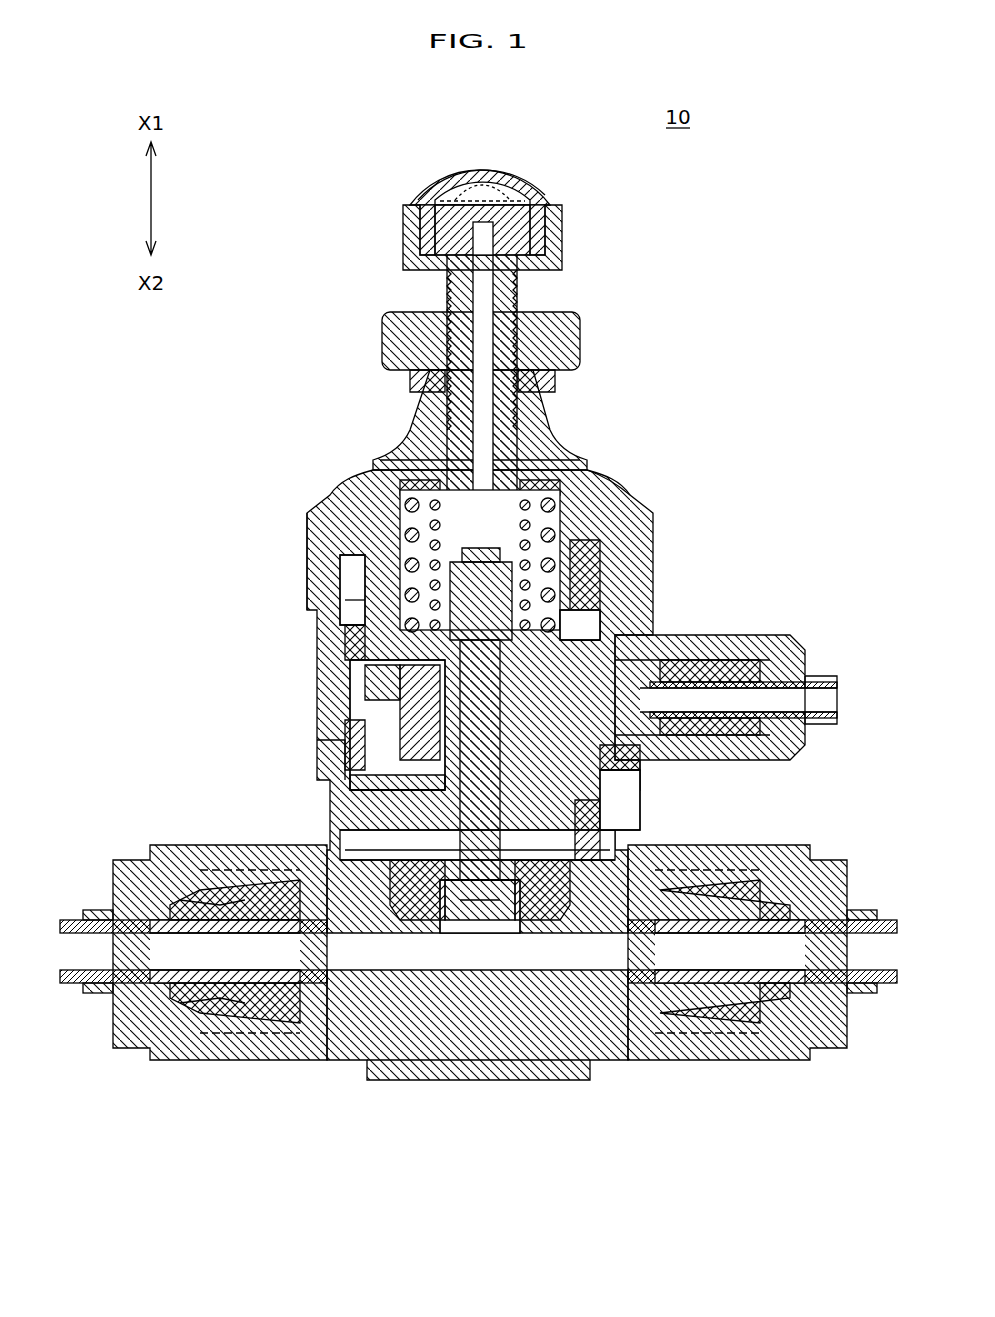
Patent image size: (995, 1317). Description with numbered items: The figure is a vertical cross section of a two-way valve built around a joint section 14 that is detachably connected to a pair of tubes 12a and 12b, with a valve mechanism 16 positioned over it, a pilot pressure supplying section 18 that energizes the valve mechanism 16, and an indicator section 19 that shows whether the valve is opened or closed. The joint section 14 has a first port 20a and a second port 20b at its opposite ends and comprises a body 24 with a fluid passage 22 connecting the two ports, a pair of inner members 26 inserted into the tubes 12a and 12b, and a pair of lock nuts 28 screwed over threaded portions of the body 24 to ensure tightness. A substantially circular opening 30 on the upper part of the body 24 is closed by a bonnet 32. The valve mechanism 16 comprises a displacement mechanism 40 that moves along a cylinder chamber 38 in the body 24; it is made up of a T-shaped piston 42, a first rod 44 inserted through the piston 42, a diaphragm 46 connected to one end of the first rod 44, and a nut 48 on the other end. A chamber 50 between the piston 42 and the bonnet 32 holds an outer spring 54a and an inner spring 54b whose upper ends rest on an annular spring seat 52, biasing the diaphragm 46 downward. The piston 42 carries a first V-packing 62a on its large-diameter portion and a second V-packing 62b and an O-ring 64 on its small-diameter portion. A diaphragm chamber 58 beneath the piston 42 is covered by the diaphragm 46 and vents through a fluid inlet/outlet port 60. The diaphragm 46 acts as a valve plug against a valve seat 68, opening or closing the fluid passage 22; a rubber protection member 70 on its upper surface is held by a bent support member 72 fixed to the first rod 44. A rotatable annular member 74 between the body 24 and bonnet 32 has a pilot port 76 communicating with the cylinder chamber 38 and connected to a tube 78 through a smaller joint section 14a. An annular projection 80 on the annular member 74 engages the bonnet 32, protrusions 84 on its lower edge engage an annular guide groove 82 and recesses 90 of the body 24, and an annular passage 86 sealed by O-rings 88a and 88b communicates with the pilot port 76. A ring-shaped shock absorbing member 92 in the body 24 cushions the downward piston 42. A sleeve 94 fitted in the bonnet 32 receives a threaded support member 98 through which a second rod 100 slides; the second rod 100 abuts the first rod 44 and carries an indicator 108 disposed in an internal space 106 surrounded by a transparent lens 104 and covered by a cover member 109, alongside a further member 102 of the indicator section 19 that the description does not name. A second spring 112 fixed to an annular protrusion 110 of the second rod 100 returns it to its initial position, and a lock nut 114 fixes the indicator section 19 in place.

The tube 12a is at (85, 985).
The tube 12b is at (880, 985).
The joint section 14 is at (707, 1074).
The joint section 14a is at (813, 762).
The valve mechanism 16 is at (590, 568).
The pilot pressure supplying section 18 is at (780, 644).
The indicator section 19 is at (560, 178).
The first port 20a is at (200, 1040).
The second port 20b is at (770, 1000).
The fluid passage 22 is at (525, 960).
The body 24 is at (400, 1062).
The inner members 26 is at (250, 1000).
The lock nuts 28 is at (150, 1045).
The opening 30 is at (320, 560).
The bonnet 32 is at (625, 500).
The cylinder chamber 38 is at (320, 672).
The displacement mechanism 40 is at (530, 548).
The piston 42 is at (610, 590).
The first rod 44 is at (340, 603).
The diaphragm 46 is at (475, 925).
The nut 48 is at (345, 580).
The chamber 50 is at (402, 520).
The spring seat 52 is at (415, 440).
The outer spring 54a is at (575, 472).
The inner spring 54b is at (528, 448).
The diaphragm chamber 58 is at (338, 812).
The fluid inlet/outlet port 60 is at (340, 835).
The first V-packing 62a is at (345, 640).
The second V-packing 62b is at (345, 740).
The O-ring 64 is at (602, 820).
The valve seat 68 is at (448, 925).
The protection member 70 is at (560, 925).
The support member 72 is at (345, 960).
The annular member 74 is at (400, 720).
The pilot port 76 is at (790, 700).
The tube 78 is at (815, 720).
The annular projection 80 is at (600, 625).
The annular guide groove 82 is at (628, 790).
The protrusions 84 is at (325, 762).
The annular passage 86 is at (365, 690).
The O-ring 88a is at (645, 645).
The O-ring 88b is at (618, 766).
The recesses 90 is at (350, 785).
The shock absorbing member 92 is at (700, 740).
The sleeve 94 is at (428, 388).
The support member 98 is at (535, 382).
The second rod 100 is at (478, 297).
The cap 102 is at (555, 245).
The transparent lens 104 is at (438, 200).
The internal space 106 is at (492, 200).
The indicator 108 is at (548, 228).
The cover member 109 is at (508, 202).
The annular protrusion 110 is at (462, 552).
The second spring 112 is at (400, 492).
The lock nut 114 is at (565, 332).